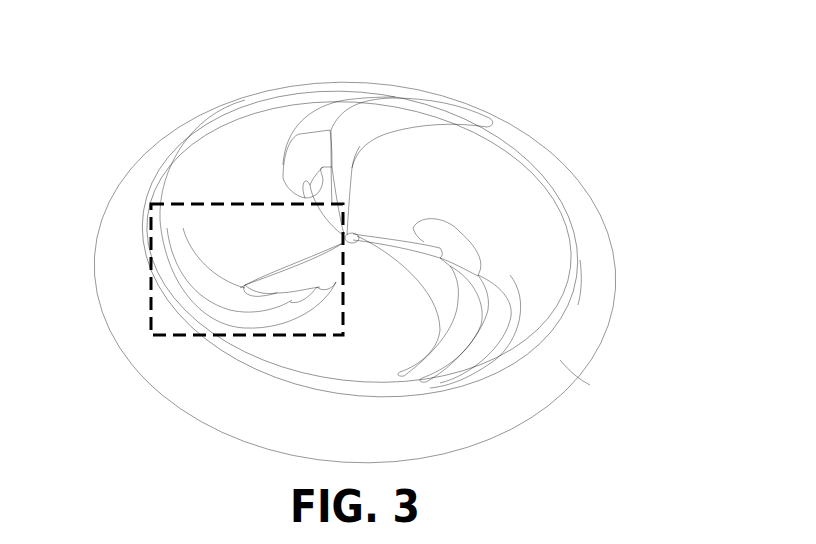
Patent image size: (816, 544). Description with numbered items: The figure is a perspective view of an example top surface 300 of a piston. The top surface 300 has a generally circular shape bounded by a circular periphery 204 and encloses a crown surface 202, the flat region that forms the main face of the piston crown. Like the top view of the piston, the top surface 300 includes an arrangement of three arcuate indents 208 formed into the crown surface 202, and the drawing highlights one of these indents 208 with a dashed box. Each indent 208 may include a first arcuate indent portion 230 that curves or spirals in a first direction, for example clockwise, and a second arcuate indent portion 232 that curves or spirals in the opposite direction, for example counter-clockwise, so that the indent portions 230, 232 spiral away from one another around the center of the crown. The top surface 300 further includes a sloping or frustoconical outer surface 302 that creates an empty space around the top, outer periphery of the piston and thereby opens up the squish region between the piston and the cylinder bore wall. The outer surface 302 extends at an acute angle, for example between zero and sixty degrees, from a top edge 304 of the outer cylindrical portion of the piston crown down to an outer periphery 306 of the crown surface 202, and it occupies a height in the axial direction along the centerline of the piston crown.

The top surface 300 is at (512, 70).
The crown surface 202 is at (490, 197).
The circular periphery 204 is at (560, 223).
The arcuate indents 208 is at (152, 308).
The first arcuate indent portion 230 is at (360, 147).
The second arcuate indent portion 232 is at (298, 153).
The outer surface 302 is at (587, 277).
The top edge 304 is at (575, 375).
The outer periphery 306 is at (490, 367).